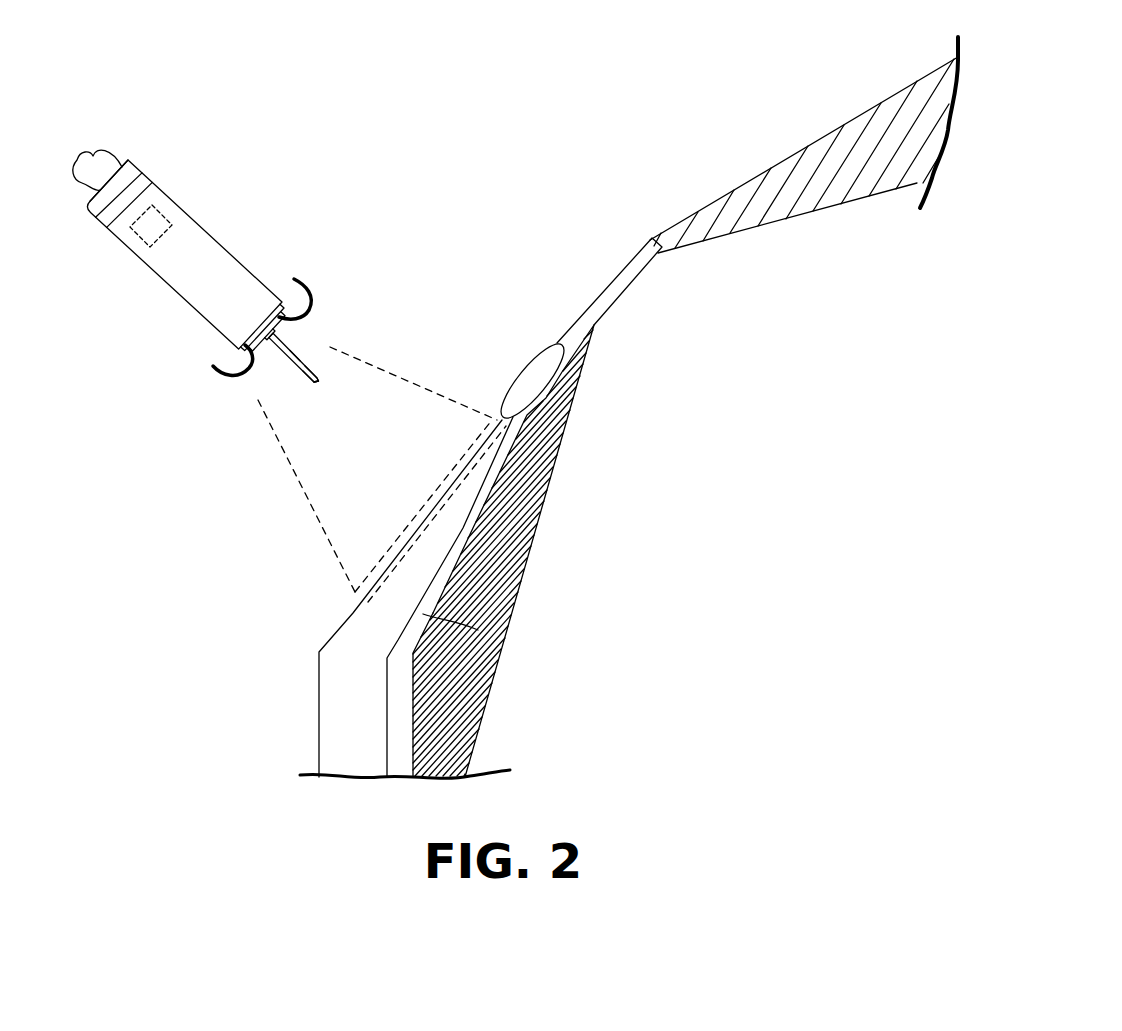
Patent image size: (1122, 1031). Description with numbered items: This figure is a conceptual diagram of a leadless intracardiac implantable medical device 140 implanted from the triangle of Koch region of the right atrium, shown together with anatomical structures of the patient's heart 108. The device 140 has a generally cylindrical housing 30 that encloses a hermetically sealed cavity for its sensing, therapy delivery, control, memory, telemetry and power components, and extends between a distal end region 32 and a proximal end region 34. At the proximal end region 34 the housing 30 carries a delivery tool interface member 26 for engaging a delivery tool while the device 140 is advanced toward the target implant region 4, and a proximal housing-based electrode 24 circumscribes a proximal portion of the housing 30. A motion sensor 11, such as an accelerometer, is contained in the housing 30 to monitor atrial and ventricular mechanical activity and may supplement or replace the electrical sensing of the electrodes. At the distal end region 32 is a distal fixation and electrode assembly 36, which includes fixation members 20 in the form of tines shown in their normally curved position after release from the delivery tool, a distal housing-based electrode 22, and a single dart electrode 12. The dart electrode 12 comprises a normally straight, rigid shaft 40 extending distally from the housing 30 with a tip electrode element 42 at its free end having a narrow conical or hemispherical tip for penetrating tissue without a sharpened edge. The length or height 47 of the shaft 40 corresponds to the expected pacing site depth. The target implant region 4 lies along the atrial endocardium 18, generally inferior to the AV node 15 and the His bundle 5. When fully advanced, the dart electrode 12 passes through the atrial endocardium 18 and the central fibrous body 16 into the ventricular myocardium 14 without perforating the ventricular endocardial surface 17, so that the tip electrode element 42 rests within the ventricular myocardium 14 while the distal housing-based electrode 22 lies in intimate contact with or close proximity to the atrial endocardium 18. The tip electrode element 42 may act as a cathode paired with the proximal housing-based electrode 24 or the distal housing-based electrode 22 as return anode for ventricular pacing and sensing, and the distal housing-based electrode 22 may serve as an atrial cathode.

The intracardiac implantable medical device 140 is at (194, 201).
The housing 30 is at (150, 268).
The proximal end region 34 is at (115, 158).
The delivery tool interface member 26 is at (102, 150).
The proximal housing-based electrode 24 is at (104, 226).
The motion sensor 11 is at (163, 208).
The distal end region 32 is at (278, 294).
The distal fixation and electrode assembly 36 is at (302, 326).
The fixation members 20 is at (307, 287).
The distal housing-based electrode 22 is at (270, 343).
The shaft 40 is at (293, 363).
The tip electrode element 42 is at (308, 378).
The length or height of the shaft 47 is at (309, 356).
The dart electrode 12 is at (333, 378).
The His bundle 5 is at (597, 298).
The patient's heart 108 is at (803, 118).
The AV node 15 is at (513, 378).
The target implant region 4 is at (385, 543).
The atrial endocardium 18 is at (352, 655).
The ventricular myocardium 14 is at (547, 503).
The central fibrous body 16 is at (500, 642).
The ventricular endocardial surface 17 is at (526, 557).